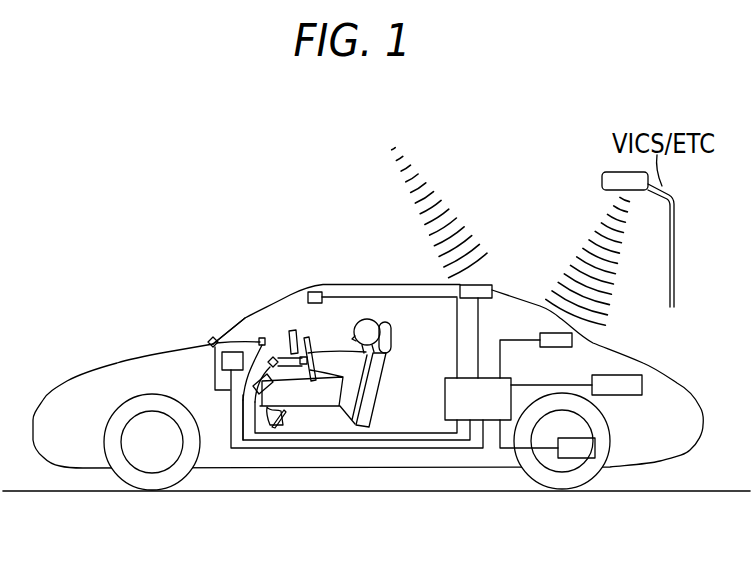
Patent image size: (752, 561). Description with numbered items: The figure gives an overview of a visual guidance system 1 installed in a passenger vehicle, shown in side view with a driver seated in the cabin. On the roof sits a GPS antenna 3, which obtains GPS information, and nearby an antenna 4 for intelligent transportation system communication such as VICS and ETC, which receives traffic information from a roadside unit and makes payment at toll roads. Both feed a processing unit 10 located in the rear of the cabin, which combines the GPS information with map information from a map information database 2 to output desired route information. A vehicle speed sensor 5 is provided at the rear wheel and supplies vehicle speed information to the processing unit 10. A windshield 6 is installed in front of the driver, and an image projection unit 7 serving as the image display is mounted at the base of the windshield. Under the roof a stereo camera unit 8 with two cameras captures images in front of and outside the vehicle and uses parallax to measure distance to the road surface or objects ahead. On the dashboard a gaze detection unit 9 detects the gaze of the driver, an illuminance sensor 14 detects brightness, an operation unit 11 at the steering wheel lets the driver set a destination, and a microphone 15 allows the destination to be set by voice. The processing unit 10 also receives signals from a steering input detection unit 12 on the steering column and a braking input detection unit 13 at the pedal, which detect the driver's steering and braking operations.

The visual guidance system 1 is at (520, 199).
The map information database 2 is at (627, 395).
The GPS antenna 3 is at (488, 284).
The antenna for intelligent transportation system communication 4 is at (573, 340).
The vehicle speed sensor 5 is at (575, 458).
The windshield 6 is at (247, 318).
The image projection unit 7 is at (222, 361).
The stereo camera unit 8 is at (315, 292).
The gaze detection unit 9 is at (263, 339).
The processing unit 10 is at (445, 395).
The operation unit 11 is at (295, 338).
The steering input detection unit 12 is at (261, 394).
The braking input detection unit 13 is at (276, 428).
The illuminance sensor 14 is at (212, 337).
The microphone 15 is at (248, 390).